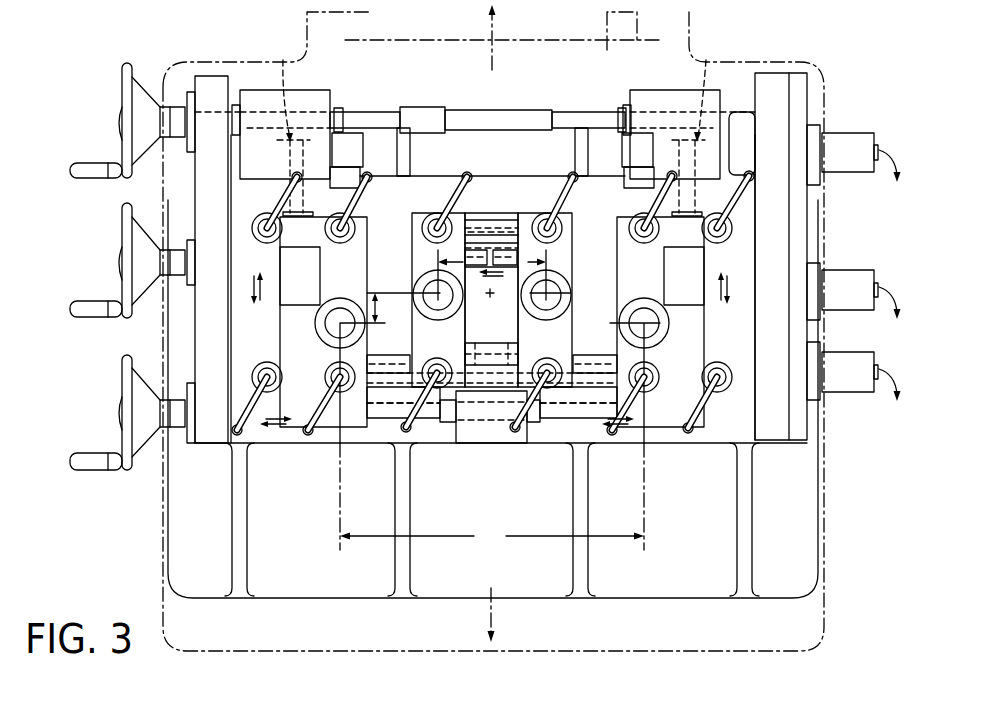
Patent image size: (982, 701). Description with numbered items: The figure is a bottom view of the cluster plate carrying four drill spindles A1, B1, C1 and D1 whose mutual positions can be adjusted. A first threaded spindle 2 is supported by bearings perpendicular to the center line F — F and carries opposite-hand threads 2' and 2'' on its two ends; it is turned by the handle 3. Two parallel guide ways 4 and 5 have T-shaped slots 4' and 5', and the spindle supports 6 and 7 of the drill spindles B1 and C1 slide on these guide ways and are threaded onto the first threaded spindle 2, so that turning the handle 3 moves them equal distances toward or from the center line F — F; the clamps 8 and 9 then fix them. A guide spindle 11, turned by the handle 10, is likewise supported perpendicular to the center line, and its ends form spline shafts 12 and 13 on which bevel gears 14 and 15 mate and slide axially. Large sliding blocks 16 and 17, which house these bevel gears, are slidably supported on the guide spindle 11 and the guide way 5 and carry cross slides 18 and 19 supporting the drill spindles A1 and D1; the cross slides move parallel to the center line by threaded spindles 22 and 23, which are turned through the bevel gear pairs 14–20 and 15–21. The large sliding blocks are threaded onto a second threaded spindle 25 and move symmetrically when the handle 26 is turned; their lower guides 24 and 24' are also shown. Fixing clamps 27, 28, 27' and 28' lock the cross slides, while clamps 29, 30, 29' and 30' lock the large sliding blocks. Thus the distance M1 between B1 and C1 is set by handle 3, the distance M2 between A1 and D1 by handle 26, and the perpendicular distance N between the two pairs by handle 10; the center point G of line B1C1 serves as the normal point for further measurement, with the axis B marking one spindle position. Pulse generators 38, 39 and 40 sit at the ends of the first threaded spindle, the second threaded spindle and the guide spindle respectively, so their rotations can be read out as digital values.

The first threaded spindle 2 is at (503, 258).
The handle 3 is at (86, 304).
The guide way 4 is at (499, 282).
The T-shaped slot 4' is at (491, 210).
The guide way 5 is at (492, 366).
The T-shaped slot 5' is at (491, 343).
The spindle support 6 is at (570, 236).
The spindle support 7 is at (410, 233).
The clamp 8 is at (436, 218).
The clamp 9 is at (434, 362).
The handle 10 is at (88, 166).
The guide spindle 11 is at (472, 116).
The spline shaft 12 is at (347, 120).
The spline shaft 13 is at (602, 118).
The bevel gear 14 is at (286, 90).
The bevel gear 15 is at (710, 90).
The large sliding block 16 is at (281, 134).
The large sliding block 17 is at (673, 134).
The cross slide 18 is at (323, 322).
The cross slide 19 is at (660, 322).
The bevel gear 20 is at (282, 145).
The bevel gear 21 is at (662, 142).
The threaded spindle 22 is at (304, 203).
The threaded spindle 23 is at (698, 196).
The lower guide 24 is at (399, 440).
The lower guide 24' is at (576, 438).
The second threaded spindle 25 is at (460, 414).
The handle 26 is at (83, 457).
The fixing clamp 27 is at (330, 209).
The fixing clamp 27' is at (661, 208).
The fixing clamp 28 is at (319, 398).
The fixing clamp 28' is at (647, 388).
The fixing clamp 29 is at (268, 238).
The fixing clamp 29' is at (728, 237).
The fixing clamp 30 is at (262, 382).
The fixing clamp 30' is at (716, 381).
The pulse generator 38 is at (861, 294).
The pulse generator 39 is at (861, 376).
The pulse generator 40 is at (861, 157).
The drill spindle A1 is at (664, 313).
The drill spindle B1 is at (550, 289).
The drill spindle C1 is at (430, 308).
The drill spindle D1 is at (321, 318).
The distance between first drill spindles M1 is at (492, 253).
The distance between second tool spindles M2 is at (492, 540).
The perpendicular distance between spindle pairs N is at (383, 308).
The center point G is at (492, 224).
The axis B is at (652, 534).
The center line F is at (491, 603).
The thread 2' is at (484, 280).
The thread 2'' is at (503, 280).